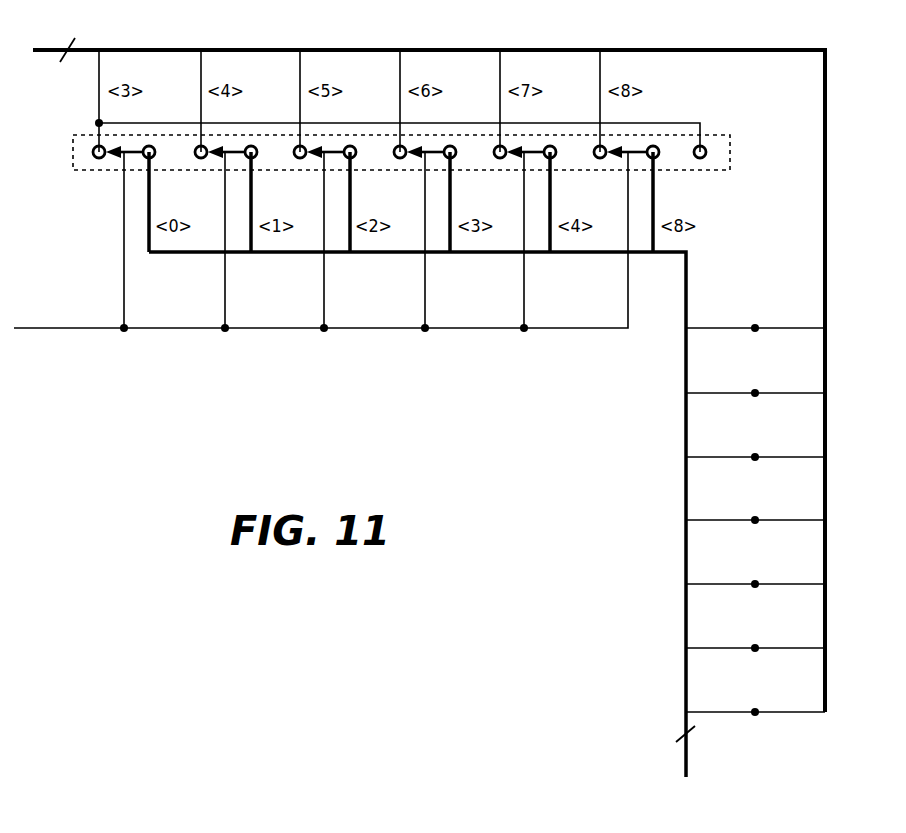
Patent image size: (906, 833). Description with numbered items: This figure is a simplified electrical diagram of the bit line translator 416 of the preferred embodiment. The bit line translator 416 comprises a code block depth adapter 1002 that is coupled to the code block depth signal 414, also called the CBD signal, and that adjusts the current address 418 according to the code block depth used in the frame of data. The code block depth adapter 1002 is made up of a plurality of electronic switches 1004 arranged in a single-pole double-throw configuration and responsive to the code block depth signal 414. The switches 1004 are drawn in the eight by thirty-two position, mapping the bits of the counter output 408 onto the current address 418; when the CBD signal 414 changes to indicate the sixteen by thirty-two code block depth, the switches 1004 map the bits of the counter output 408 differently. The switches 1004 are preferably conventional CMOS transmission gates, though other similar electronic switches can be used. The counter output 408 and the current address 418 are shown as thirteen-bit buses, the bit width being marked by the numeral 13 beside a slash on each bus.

The bus width indicator 13 is at (377, 380).
The counter output 408 is at (330, 50).
The code block depth adapter 1002 is at (725, 136).
The electronic switches 1004 is at (657, 160).
The code block depth signal 414 is at (181, 329).
The bit line translator 416 is at (468, 464).
The current address 418 is at (683, 681).